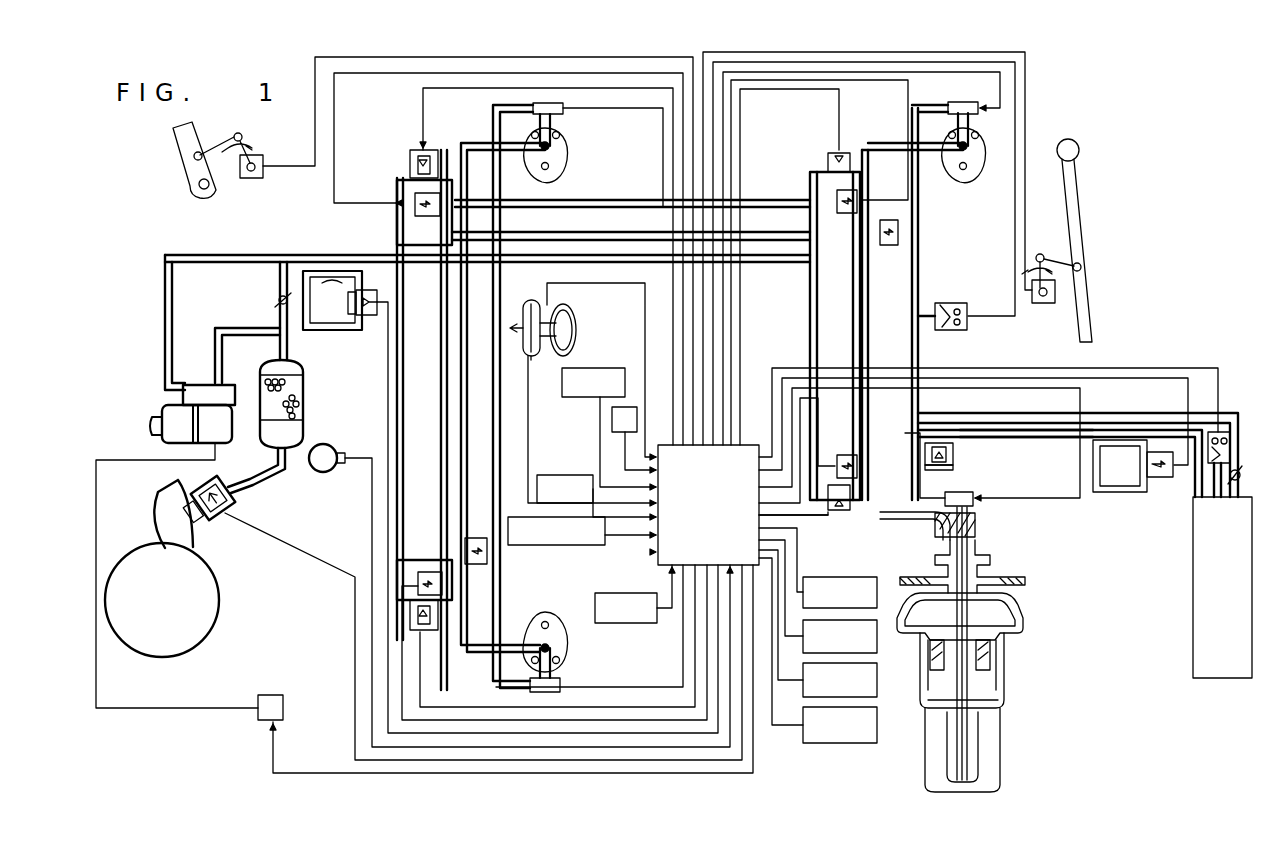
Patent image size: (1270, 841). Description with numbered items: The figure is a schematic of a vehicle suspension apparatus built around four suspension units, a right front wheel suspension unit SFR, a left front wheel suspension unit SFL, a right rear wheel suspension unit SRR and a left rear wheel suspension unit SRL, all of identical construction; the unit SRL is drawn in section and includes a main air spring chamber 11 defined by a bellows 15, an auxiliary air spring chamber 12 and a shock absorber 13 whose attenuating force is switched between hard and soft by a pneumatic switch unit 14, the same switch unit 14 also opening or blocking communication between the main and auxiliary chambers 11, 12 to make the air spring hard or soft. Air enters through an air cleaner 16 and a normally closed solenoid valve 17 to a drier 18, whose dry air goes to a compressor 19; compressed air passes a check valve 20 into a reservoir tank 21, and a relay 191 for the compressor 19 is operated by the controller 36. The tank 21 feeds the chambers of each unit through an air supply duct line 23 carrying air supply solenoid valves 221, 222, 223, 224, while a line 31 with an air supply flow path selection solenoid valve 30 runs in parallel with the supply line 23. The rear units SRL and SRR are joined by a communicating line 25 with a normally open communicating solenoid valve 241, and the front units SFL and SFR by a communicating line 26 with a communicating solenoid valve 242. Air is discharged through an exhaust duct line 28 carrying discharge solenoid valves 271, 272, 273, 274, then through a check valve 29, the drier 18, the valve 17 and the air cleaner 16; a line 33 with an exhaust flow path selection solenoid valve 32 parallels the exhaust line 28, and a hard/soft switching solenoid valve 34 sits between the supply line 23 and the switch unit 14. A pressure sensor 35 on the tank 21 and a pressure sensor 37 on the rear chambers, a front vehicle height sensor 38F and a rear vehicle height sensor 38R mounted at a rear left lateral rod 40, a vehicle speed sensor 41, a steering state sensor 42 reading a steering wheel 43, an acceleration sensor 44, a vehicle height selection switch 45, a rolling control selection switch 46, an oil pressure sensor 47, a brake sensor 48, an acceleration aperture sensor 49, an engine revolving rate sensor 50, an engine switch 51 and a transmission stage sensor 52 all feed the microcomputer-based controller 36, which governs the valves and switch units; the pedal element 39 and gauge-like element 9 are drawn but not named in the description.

The pressure gauge 9 is at (323, 472).
The main air spring chamber 11 is at (1004, 690).
The auxiliary air spring chamber 12 is at (1025, 612).
The shock absorber 13 is at (978, 762).
The pneumatic switch unit 14 is at (960, 90).
The bellows 15 is at (1000, 735).
The air cleaner 16 is at (219, 612).
The solenoid valve 17 is at (232, 502).
The drier 18 is at (303, 398).
The compressor 19 is at (162, 418).
The check valve 20 is at (1242, 472).
The reservoir tank 21 is at (1193, 628).
The air supply duct line 23 is at (1042, 430).
The communicating line 25 is at (905, 350).
The communicating line 26 is at (455, 418).
The exhaust duct line 28 is at (835, 245).
The check valve 29 is at (278, 296).
The air supply flow path selection solenoid valve 30 is at (1160, 477).
The line 31 is at (1112, 492).
The exhaust flow path selection solenoid valve 32 is at (370, 315).
The line 33 is at (330, 330).
The hard/soft switching solenoid valve 34 is at (950, 470).
The pressure sensor 35 is at (1228, 432).
The controller 36 is at (768, 517).
The pressure sensor 37 is at (962, 330).
The vehicle height sensor 38F is at (263, 160).
The vehicle height sensor 38R is at (1043, 303).
The brake pedal 39 is at (185, 170).
The rear left lateral rod 40 is at (1084, 200).
The vehicle speed sensor 41 is at (536, 360).
The steering state sensor 42 is at (539, 282).
The steering wheel 43 is at (578, 312).
The acceleration sensor 44 is at (612, 418).
The vehicle height selection switch 45 is at (562, 475).
The rolling control selection switch 46 is at (578, 545).
The oil pressure sensor 47 is at (612, 362).
The brake sensor 48 is at (636, 623).
The acceleration aperture sensor 49 is at (845, 577).
The engine revolving rate sensor 50 is at (868, 636).
The engine switch 51 is at (803, 690).
The transmission stage sensor 52 is at (803, 738).
The relay 191 is at (274, 683).
The air supply solenoid valve 221 is at (835, 512).
The air supply solenoid valve 222 is at (828, 155).
The air supply solenoid valve 223 is at (428, 632).
The air supply solenoid valve 224 is at (410, 152).
The communicating solenoid valve 241 is at (898, 246).
The communicating solenoid valve 242 is at (487, 560).
The discharge solenoid valve 271 is at (858, 478).
The discharge solenoid valve 272 is at (858, 200).
The discharge solenoid valve 273 is at (390, 560).
The discharge solenoid valve 274 is at (396, 210).
The right front wheel suspension unit SFR is at (567, 150).
The left front wheel suspension unit SFL is at (568, 601).
The right rear wheel suspension unit SRR is at (985, 168).
The left rear wheel suspension unit SRL is at (1010, 548).
The element controller is at (708, 493).